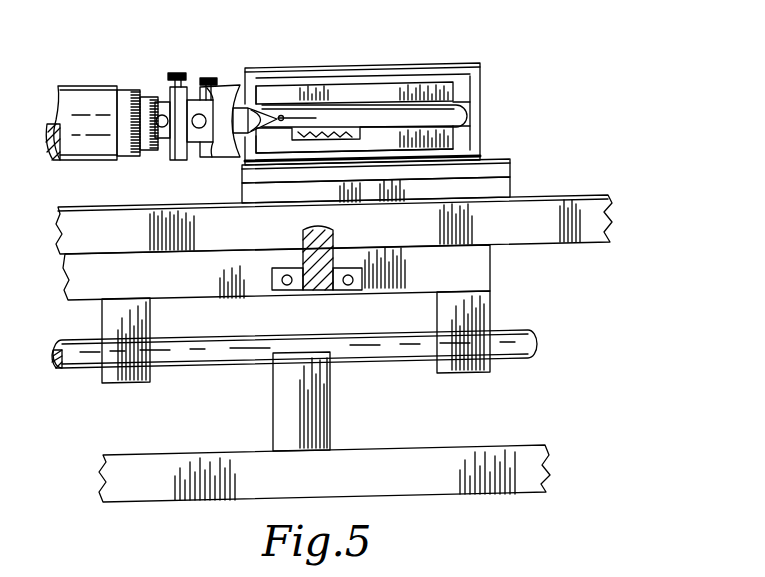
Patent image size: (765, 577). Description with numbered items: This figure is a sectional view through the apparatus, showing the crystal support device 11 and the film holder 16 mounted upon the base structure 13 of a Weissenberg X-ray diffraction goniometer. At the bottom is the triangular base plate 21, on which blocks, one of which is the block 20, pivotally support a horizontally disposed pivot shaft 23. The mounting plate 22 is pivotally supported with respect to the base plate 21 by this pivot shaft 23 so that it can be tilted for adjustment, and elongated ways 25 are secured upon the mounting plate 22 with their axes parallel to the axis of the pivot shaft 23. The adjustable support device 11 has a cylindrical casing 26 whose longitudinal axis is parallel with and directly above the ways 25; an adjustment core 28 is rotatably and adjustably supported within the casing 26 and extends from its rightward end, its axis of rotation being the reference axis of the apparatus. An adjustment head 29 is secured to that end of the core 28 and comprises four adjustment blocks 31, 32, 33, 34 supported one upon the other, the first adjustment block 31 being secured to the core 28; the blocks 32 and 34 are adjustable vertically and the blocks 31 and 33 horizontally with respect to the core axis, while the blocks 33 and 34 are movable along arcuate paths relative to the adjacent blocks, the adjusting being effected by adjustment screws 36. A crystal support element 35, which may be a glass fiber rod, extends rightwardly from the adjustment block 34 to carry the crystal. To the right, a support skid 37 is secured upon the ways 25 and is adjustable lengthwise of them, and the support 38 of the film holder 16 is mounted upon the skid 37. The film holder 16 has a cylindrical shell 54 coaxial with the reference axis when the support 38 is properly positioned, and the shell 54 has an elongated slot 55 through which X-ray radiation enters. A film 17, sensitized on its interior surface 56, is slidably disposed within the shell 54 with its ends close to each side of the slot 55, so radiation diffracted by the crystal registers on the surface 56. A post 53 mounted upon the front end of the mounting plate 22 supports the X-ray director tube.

The crystal support device 11 is at (101, 85).
The base structure 13 is at (498, 325).
The film holder 16 is at (383, 90).
The film 17 is at (327, 129).
The block 20 is at (330, 422).
The base plate 21 is at (525, 455).
The mounting plate 22 is at (480, 276).
The pivot shaft 23 is at (206, 362).
The way 25 is at (592, 230).
The cylindrical casing 26 is at (62, 100).
The adjustment core 28 is at (134, 89).
The adjustment head 29 is at (201, 77).
The first adjustment block 31 is at (172, 150).
The adjustment block 32 is at (199, 142).
The adjustment block 33 is at (219, 92).
The adjustment block 34 is at (245, 150).
The crystal support element 35 is at (282, 114).
The adjustment screw 36 is at (176, 72).
The support skid 37 is at (502, 190).
The film holder support 38 is at (505, 160).
The post 53 is at (310, 290).
The cylindrical shell 54 is at (408, 78).
The elongated slot 55 is at (362, 98).
The sensitized interior surface 56 is at (387, 121).